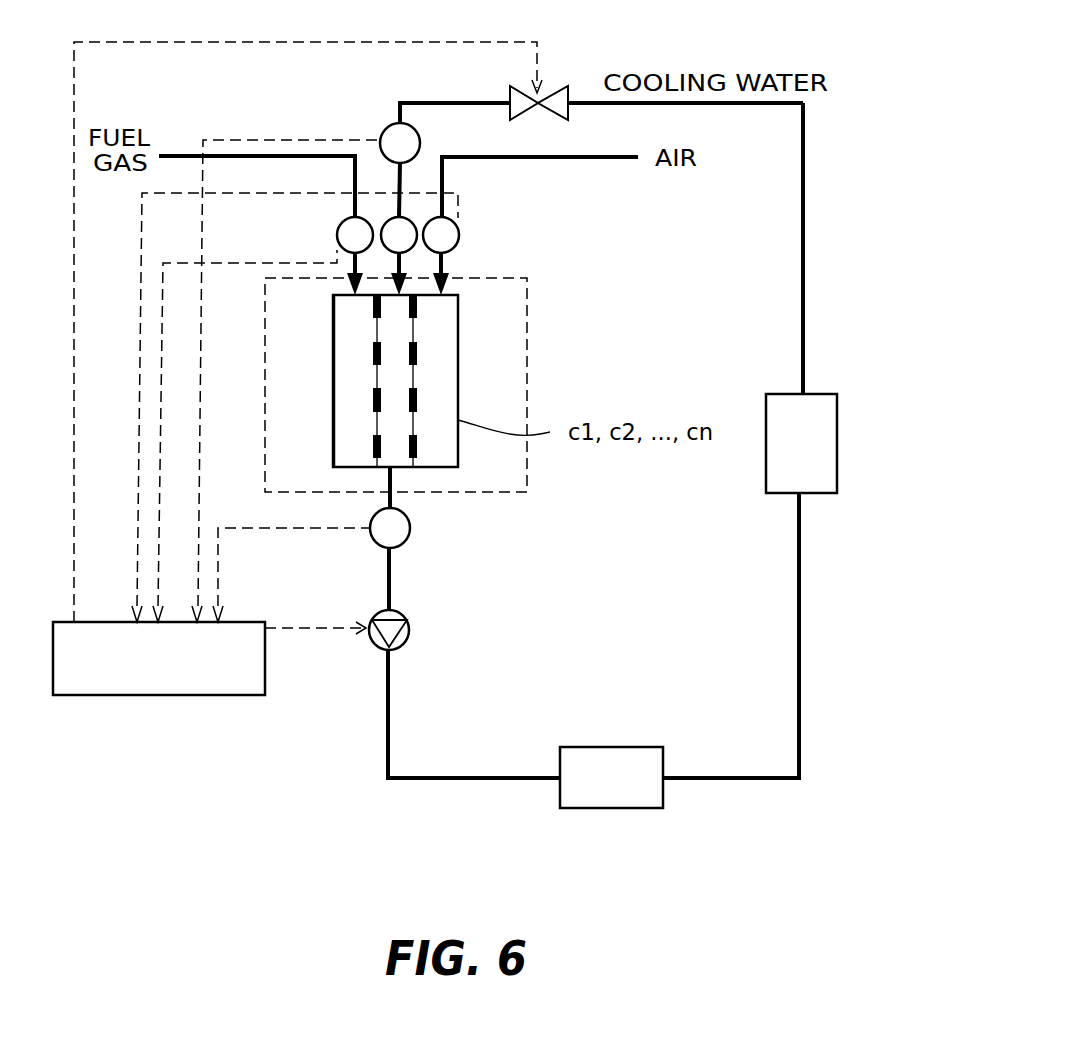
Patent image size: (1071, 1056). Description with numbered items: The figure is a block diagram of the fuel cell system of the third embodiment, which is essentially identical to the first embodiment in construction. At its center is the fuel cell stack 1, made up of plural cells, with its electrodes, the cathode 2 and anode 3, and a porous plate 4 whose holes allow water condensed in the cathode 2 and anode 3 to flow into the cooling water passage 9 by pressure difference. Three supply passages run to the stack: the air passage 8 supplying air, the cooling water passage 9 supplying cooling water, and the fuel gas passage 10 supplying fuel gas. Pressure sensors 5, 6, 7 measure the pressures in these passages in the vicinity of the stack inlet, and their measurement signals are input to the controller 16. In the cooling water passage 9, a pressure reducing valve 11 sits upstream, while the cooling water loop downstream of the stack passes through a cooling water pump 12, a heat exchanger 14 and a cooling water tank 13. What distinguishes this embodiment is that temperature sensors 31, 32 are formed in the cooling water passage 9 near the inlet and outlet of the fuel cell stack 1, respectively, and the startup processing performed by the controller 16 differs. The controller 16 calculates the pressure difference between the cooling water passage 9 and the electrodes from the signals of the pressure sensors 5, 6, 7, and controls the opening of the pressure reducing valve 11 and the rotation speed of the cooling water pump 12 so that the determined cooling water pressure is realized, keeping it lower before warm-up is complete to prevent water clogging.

The fuel cell stack 1 is at (523, 472).
The cathode 2 is at (445, 383).
The anode 3 is at (345, 370).
The porous plate 4 is at (377, 328).
The pressure sensor 5 is at (460, 237).
The pressure sensor 6 is at (388, 220).
The pressure sensor 7 is at (338, 236).
The air passage 8 is at (623, 162).
The cooling water passage 9 is at (395, 113).
The fuel gas passage 10 is at (175, 154).
The pressure reducing valve 11 is at (551, 84).
The cooling water pump 12 is at (410, 630).
The cooling water tank 13 is at (826, 450).
The heat exchanger 14 is at (624, 812).
The controller 16 is at (108, 684).
The temperature sensor 31 is at (420, 134).
The temperature sensor 32 is at (415, 528).